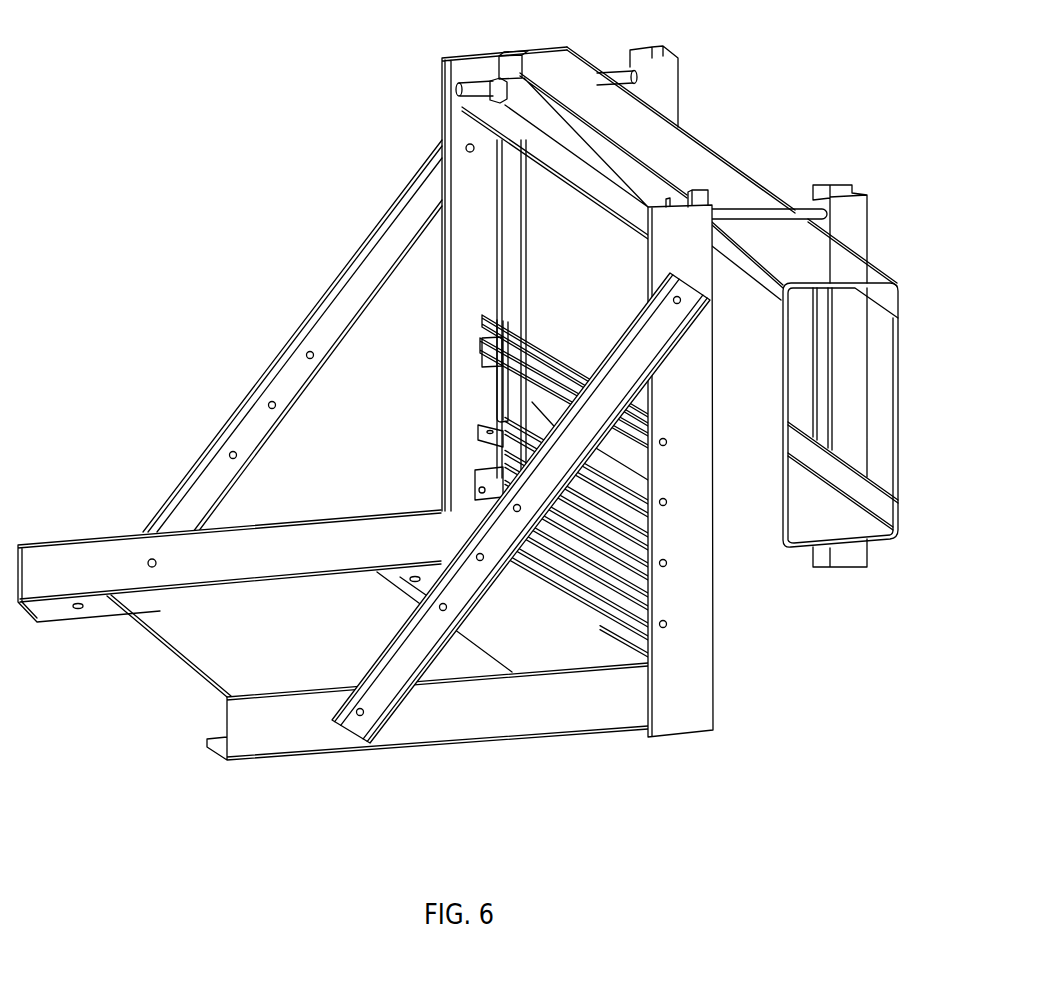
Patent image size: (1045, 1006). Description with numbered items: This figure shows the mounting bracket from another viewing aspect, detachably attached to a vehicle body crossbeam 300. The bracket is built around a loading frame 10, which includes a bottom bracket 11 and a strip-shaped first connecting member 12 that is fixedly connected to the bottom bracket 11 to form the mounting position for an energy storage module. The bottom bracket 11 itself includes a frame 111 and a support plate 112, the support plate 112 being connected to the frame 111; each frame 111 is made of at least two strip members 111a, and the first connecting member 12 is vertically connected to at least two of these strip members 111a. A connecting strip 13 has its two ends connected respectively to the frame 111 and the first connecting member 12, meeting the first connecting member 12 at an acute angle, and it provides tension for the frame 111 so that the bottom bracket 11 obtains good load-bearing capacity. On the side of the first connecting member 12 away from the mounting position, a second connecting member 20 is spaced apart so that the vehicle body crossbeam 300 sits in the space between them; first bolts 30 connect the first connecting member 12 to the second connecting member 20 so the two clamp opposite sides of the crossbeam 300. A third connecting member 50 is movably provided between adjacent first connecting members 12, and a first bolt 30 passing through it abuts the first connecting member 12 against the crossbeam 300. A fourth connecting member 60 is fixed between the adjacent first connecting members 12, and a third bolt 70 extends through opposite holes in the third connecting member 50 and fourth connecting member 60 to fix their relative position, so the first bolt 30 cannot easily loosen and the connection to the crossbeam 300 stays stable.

The loading frame 10 is at (513, 377).
The bottom bracket 11 is at (333, 660).
The first connecting member 12 is at (693, 568).
The connecting strip 13 is at (288, 380).
The second connecting member 20 is at (852, 217).
The first bolt 30 is at (601, 70).
The third connecting member 50 is at (535, 370).
The fourth connecting member 60 is at (543, 342).
The third bolt 70 is at (497, 381).
The frame 111 is at (537, 716).
The strip member 111a is at (427, 732).
The support plate 112 is at (252, 636).
The vehicle body crossbeam 300 is at (703, 165).